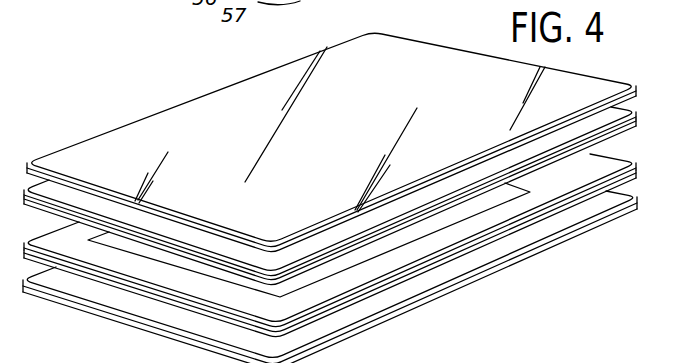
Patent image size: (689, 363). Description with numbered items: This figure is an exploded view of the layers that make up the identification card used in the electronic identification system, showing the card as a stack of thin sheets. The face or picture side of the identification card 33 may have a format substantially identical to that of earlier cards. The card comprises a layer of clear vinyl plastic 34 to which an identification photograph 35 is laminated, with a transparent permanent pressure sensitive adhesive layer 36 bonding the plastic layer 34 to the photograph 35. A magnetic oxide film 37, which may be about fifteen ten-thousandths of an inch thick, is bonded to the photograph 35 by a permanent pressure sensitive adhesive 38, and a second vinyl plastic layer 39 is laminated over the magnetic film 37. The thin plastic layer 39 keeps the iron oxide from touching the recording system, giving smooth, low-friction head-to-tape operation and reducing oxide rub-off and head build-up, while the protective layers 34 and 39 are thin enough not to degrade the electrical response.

The face or picture side of the identification card 33 is at (455, 296).
The layer of clear vinyl plastic 34 is at (523, 258).
The identification photograph 35 is at (342, 304).
The transparent permanent pressure sensitive adhesive layer 36 is at (303, 323).
The magnetic oxide film 37 is at (635, 114).
The permanent pressure sensitive adhesive 38 is at (633, 128).
The second vinyl plastic layer 39 is at (610, 79).